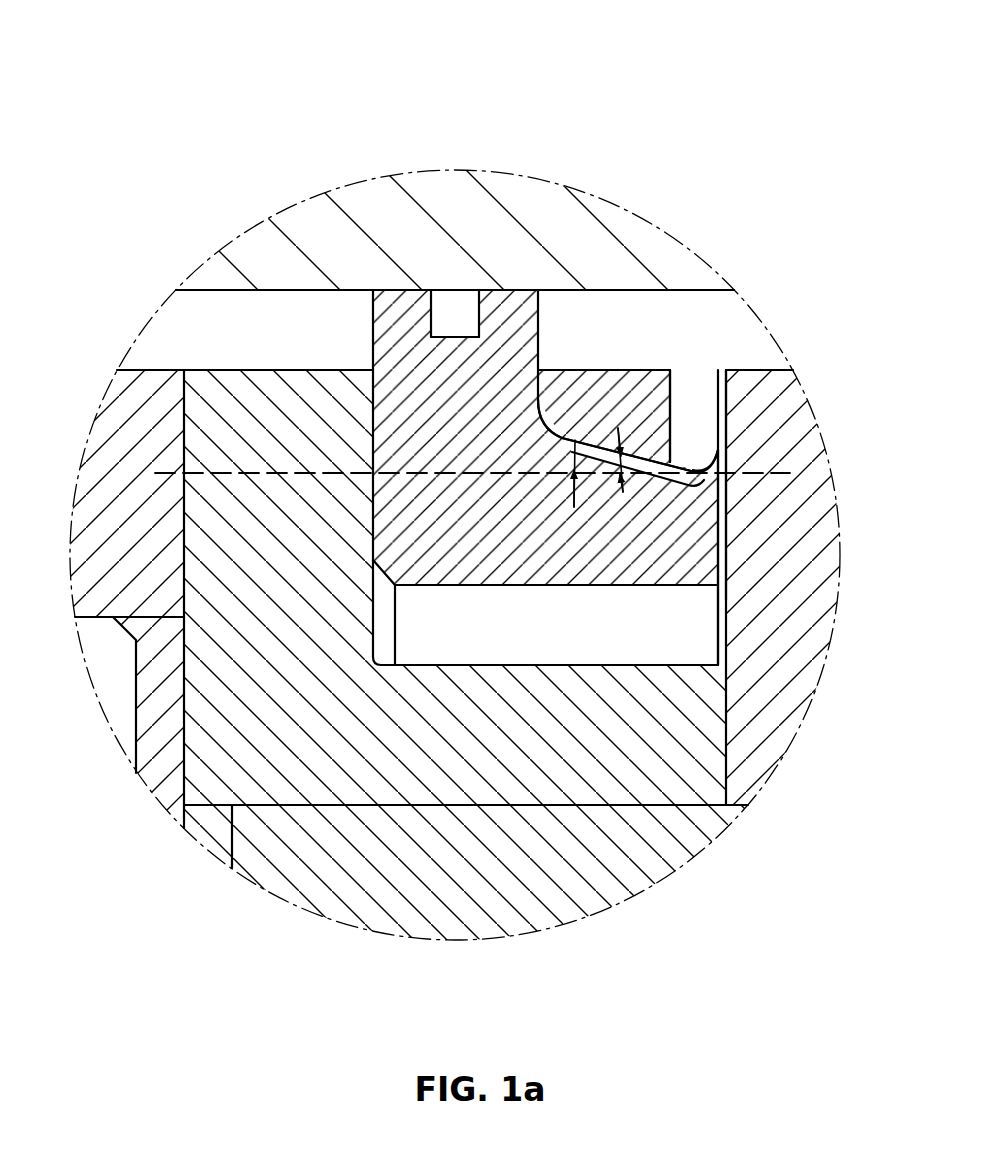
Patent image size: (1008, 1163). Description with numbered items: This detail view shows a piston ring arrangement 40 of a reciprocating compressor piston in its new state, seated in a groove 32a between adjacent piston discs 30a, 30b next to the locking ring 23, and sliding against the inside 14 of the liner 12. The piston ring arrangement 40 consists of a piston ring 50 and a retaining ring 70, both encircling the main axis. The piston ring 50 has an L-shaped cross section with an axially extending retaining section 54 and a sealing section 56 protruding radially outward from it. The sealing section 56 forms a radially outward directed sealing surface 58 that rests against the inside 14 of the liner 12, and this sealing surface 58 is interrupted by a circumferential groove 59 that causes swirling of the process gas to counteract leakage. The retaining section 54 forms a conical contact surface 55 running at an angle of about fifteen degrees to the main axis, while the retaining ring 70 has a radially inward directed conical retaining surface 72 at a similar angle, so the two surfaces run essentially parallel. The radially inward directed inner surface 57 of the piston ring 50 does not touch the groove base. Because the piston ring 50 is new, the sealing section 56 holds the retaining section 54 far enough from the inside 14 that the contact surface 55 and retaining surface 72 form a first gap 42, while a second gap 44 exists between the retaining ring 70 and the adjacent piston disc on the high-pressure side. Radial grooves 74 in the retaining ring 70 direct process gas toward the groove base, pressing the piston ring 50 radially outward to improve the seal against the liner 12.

The liner 12 is at (503, 222).
The inside 14 is at (313, 290).
The locking ring 23 is at (128, 497).
The piston disc 30a is at (360, 743).
The piston disc 30b is at (790, 607).
The groove 32a is at (600, 660).
The piston ring arrangement 40 is at (627, 318).
The first gap 42 is at (660, 448).
The second gap 44 is at (722, 423).
The piston ring 50 is at (380, 333).
The retaining section 54 is at (617, 527).
The contact surface 55 is at (583, 431).
The sealing section 56 is at (458, 417).
The inner surface 57 is at (430, 630).
The sealing surface 58 is at (385, 287).
The groove 59 is at (457, 337).
The retaining ring 70 is at (590, 393).
The retaining surface 72 is at (657, 460).
The radial groove 74 is at (685, 393).